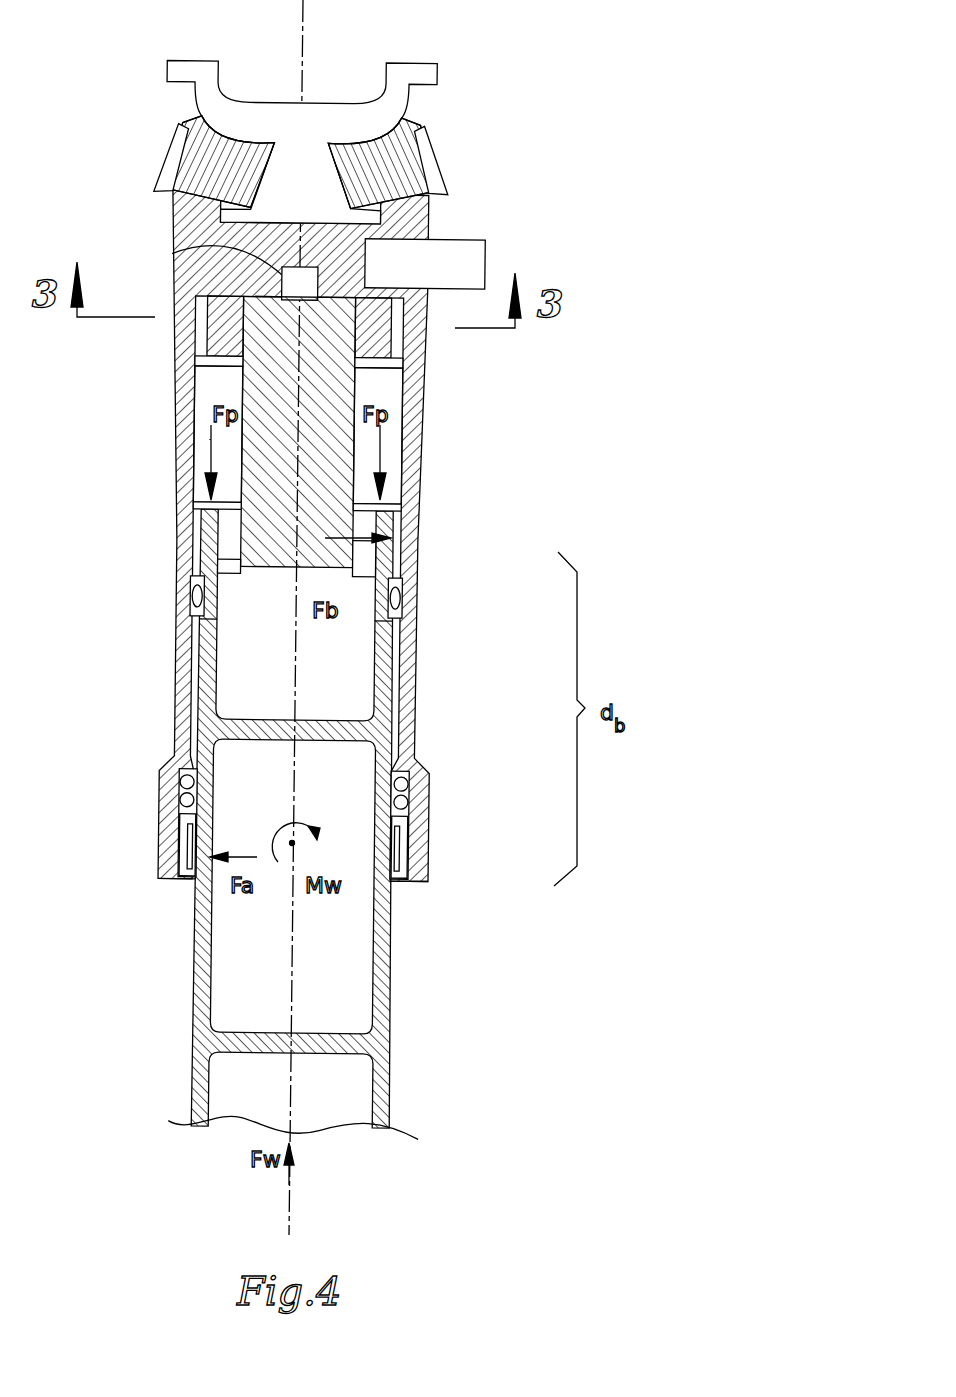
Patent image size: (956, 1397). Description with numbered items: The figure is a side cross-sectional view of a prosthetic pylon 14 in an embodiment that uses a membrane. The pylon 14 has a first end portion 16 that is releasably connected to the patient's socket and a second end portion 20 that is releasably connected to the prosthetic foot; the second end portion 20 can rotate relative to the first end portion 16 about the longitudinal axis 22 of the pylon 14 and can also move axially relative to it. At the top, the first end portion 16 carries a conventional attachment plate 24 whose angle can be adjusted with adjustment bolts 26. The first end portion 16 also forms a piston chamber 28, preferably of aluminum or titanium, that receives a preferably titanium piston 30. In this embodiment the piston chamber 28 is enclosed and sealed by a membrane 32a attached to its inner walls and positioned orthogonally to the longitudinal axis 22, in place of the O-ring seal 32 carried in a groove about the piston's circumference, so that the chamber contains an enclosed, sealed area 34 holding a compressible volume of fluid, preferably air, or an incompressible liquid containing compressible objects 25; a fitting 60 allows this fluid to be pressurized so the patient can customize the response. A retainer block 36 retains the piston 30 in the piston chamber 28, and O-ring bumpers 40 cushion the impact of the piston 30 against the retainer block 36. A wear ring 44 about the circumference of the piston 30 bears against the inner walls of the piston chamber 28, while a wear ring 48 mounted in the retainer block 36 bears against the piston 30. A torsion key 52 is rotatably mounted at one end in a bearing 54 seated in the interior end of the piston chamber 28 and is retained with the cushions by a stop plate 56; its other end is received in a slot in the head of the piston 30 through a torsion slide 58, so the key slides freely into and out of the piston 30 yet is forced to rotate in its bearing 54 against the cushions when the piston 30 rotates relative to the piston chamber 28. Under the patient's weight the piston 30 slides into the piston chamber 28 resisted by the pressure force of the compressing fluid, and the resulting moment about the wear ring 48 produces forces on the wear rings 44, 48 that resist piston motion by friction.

The pylon 14 is at (612, 436).
The first end portion 16 is at (561, 121).
The second end portion 20 is at (450, 970).
The longitudinal axis 22 is at (288, 1217).
The attachment plate 24 is at (167, 68).
The compressible objects 25 is at (226, 466).
The adjustment bolts 26 is at (165, 165).
The piston chamber 28 is at (187, 470).
The piston 30 is at (192, 1022).
The O-ring seal 32 is at (200, 593).
The membrane 32a is at (190, 503).
The sealed area 34 is at (225, 393).
The retainer block 36 is at (180, 860).
The O-ring bumpers 40 is at (180, 792).
The wear ring 44 is at (193, 553).
The wear ring 48 is at (193, 878).
The torsion key 52 is at (268, 550).
The bearing 54 is at (178, 256).
The stop plate 56 is at (197, 364).
The torsion slide 58 is at (217, 622).
The fitting 60 is at (470, 257).